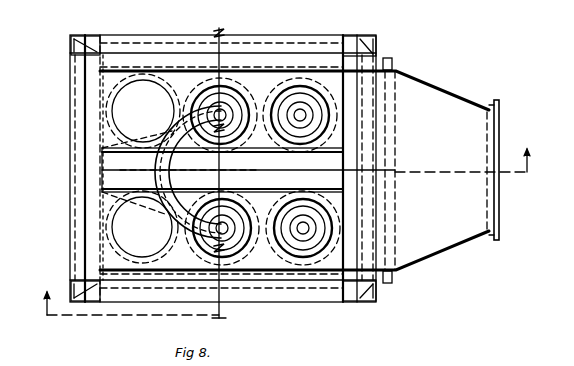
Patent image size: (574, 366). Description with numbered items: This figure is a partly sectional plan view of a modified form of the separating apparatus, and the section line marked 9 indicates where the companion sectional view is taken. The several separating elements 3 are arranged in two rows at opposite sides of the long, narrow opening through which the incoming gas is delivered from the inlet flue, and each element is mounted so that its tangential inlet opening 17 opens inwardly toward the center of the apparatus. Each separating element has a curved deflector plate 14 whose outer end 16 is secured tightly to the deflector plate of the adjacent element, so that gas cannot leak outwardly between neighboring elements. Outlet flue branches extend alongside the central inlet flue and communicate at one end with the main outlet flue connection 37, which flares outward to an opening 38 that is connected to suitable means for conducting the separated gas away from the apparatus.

The separating element 3 is at (112, 210).
The curved deflector plate 14 is at (250, 68).
The outer end of the curved deflector plate 16 is at (268, 68).
The tangential inlet opening 17 is at (298, 171).
The main outlet flue connection 37 is at (294, 170).
The opening 38 is at (499, 192).
The section line 9- 9 is at (283, 173).